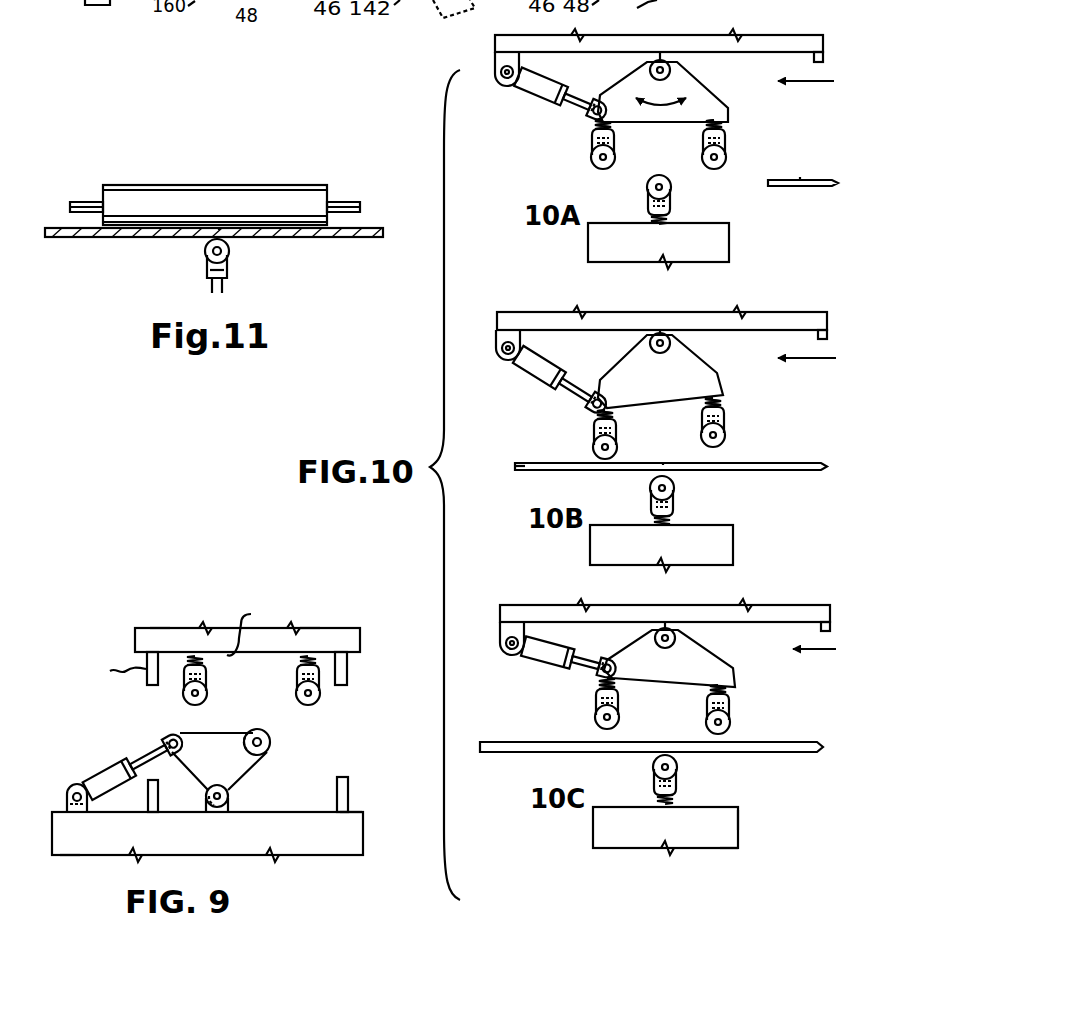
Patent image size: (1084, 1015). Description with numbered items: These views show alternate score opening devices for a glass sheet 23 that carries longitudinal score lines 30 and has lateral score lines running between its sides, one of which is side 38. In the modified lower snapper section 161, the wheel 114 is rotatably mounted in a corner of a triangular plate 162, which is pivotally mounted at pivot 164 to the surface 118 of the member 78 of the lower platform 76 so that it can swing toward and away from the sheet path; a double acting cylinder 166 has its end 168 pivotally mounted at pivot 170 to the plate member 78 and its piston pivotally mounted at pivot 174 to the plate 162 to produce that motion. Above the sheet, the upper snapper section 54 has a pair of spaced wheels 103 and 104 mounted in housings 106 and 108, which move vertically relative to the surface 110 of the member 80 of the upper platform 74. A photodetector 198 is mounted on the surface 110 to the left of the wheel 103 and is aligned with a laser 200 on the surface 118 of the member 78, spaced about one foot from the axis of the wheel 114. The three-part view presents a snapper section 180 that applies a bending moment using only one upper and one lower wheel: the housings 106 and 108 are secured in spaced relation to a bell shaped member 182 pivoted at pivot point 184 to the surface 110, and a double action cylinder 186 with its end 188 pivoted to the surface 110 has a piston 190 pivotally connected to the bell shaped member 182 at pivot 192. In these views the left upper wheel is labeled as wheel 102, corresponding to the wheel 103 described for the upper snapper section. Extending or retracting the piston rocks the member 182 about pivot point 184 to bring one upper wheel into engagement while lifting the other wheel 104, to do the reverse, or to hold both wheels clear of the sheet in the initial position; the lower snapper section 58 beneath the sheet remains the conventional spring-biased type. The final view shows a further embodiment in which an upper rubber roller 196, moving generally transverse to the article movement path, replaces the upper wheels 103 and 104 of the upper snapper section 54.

In FIG. 11, the sheet 23 is at (372, 214).
In FIG. 10, the sheet 23 is at (820, 179).
In FIG. 11, the longitudinal score line 30 is at (222, 230).
In FIG. 10, the longitudinal score line 30 is at (801, 174).
In FIG. 10, the side of the sheet 38 is at (513, 466).
In FIG. 9, the upper snapper section 54 is at (161, 620).
In FIG. 11, the lower snapper section 58 is at (202, 267).
In FIG. 10, the lower snapper section 58 is at (751, 841).
In FIG. 9, the platform 74 is at (315, 618).
In FIG. 10, the platform 74 is at (802, 26).
In FIG. 9, the platform 76 is at (83, 866).
In FIG. 10, the platform 76 is at (585, 242).
In FIG. 9, the member 78 is at (365, 832).
In FIG. 10, the member 78 is at (742, 817).
In FIG. 9, the member 80 is at (362, 636).
In FIG. 10, the member 80 is at (823, 42).
In FIG. 10, the roller 102 is at (593, 163).
In FIG. 9, the wheel 103 is at (186, 702).
In FIG. 9, the wheel 104 is at (296, 696).
In FIG. 10, the wheel 104 is at (727, 160).
In FIG. 10, the housing 106 is at (593, 146).
In FIG. 10, the housing 108 is at (727, 143).
In FIG. 9, the surface 110 is at (256, 629).
In FIG. 10, the surface 110 is at (817, 55).
In FIG. 11, the wheel 114 is at (231, 256).
In FIG. 9, the wheel 114 is at (272, 736).
In FIG. 10, the wheel 114 is at (675, 191).
In FIG. 9, the surface 118 is at (362, 811).
In FIG. 10, the surface 118 is at (614, 223).
In FIG. 9, the modified snapper section 161 is at (321, 786).
In FIG. 9, the triangular plate 162 is at (240, 761).
In FIG. 9, the pivot 164 is at (234, 788).
In FIG. 9, the double acting cylinder 166 is at (106, 760).
In FIG. 9, the end 168 is at (94, 772).
In FIG. 9, the pivot 170 is at (72, 790).
In FIG. 9, the pivot 174 is at (170, 739).
In FIG. 10, the snapper section 180 is at (825, 366).
In FIG. 10, the bell shaped member 182 is at (676, 82).
In FIG. 10, the pivot point 184 is at (660, 60).
In FIG. 10, the double action cylinder 186 is at (524, 98).
In FIG. 10, the end 188 is at (508, 85).
In FIG. 10, the piston 190 is at (585, 80).
In FIG. 10, the pivot 192 is at (586, 117).
In FIG. 11, the upper rubber roller 196 is at (214, 180).
In FIG. 9, the photodetector 198 is at (145, 672).
In FIG. 9, the laser 200 is at (348, 783).